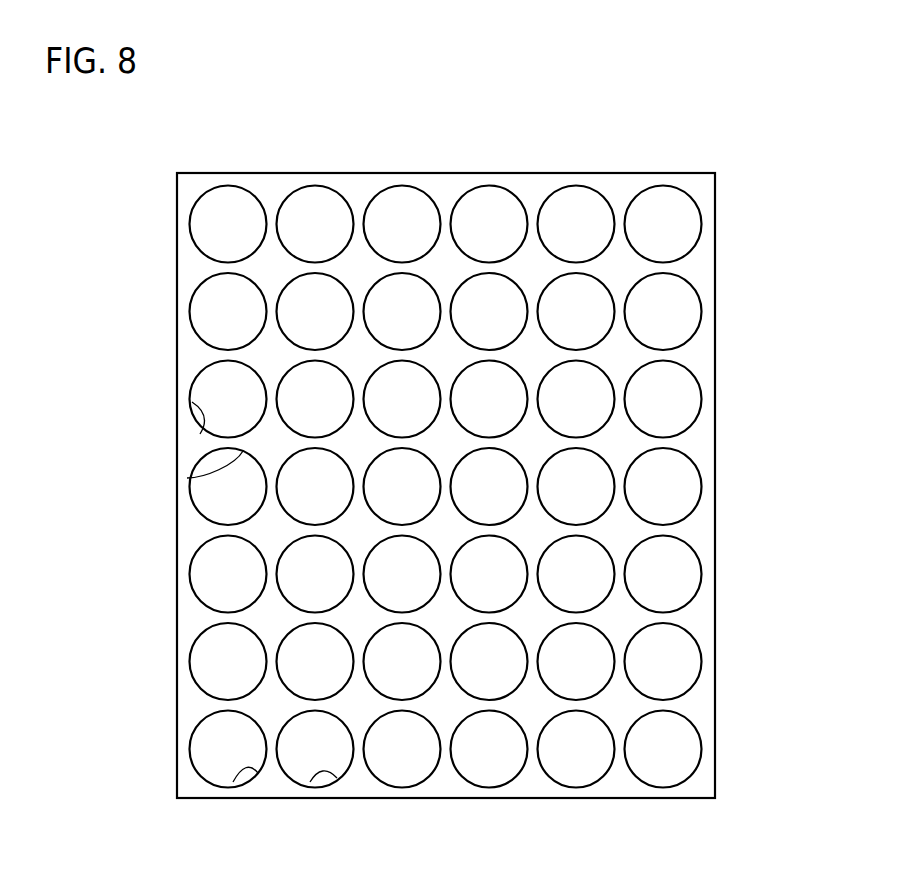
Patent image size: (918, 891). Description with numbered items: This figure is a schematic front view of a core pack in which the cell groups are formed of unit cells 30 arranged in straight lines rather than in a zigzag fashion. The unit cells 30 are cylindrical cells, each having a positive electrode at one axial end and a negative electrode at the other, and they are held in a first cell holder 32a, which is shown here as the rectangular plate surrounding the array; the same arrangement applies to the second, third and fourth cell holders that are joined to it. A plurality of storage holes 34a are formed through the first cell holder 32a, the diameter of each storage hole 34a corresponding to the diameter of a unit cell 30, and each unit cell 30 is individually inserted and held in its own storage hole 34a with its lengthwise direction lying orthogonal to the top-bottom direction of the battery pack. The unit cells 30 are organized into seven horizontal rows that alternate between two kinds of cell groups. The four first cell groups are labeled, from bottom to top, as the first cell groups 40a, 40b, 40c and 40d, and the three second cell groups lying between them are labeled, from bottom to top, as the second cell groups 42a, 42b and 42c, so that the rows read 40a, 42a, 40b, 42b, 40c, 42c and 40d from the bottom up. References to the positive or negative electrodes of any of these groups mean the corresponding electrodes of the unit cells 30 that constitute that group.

The unit cell 30 is at (487, 208).
The first cell holder 32a is at (197, 183).
The storage hole 34a is at (187, 478).
The first cell group 40a is at (712, 747).
The first cell group 40b is at (712, 572).
The first cell group 40c is at (712, 397).
The first cell group 40d is at (712, 223).
The second cell group 42a is at (712, 653).
The second cell group 42b is at (712, 478).
The second cell group 42c is at (712, 305).